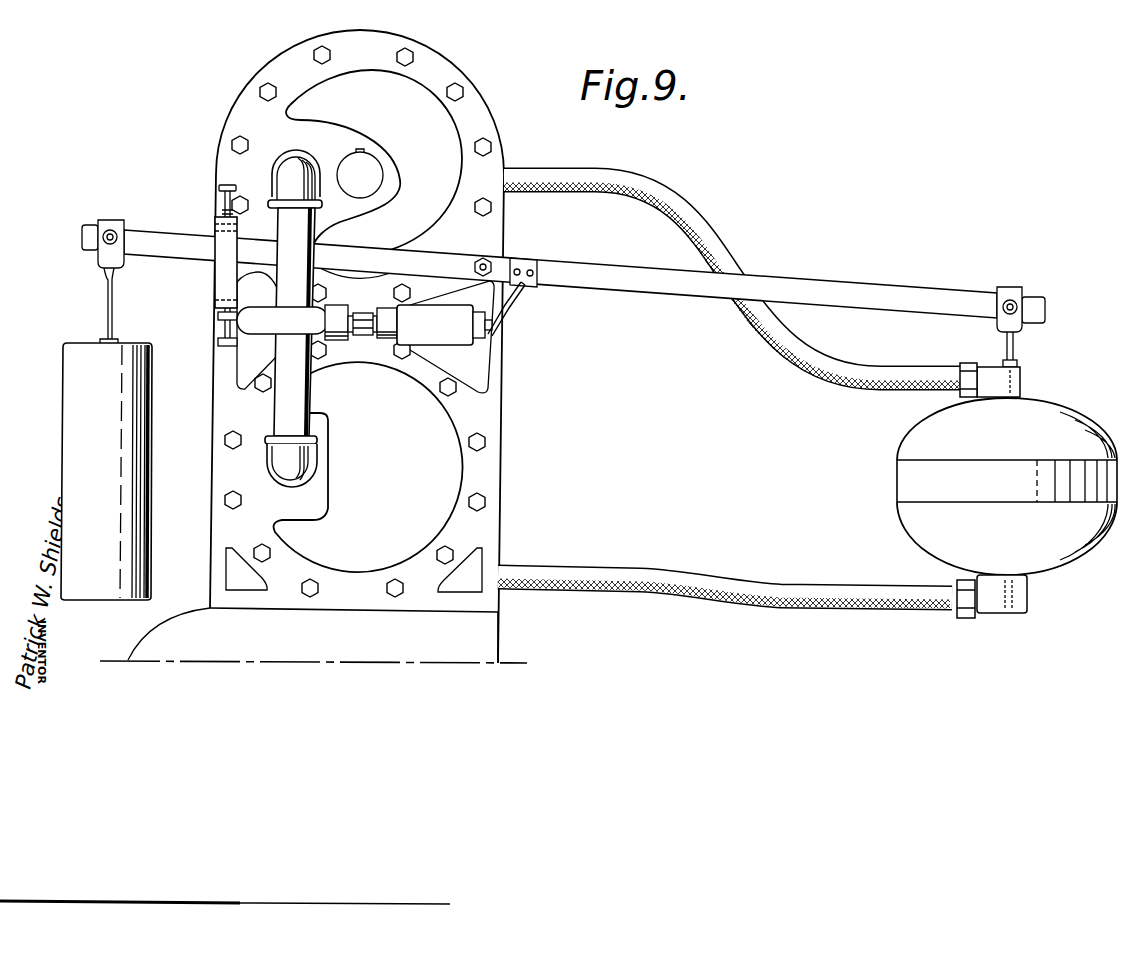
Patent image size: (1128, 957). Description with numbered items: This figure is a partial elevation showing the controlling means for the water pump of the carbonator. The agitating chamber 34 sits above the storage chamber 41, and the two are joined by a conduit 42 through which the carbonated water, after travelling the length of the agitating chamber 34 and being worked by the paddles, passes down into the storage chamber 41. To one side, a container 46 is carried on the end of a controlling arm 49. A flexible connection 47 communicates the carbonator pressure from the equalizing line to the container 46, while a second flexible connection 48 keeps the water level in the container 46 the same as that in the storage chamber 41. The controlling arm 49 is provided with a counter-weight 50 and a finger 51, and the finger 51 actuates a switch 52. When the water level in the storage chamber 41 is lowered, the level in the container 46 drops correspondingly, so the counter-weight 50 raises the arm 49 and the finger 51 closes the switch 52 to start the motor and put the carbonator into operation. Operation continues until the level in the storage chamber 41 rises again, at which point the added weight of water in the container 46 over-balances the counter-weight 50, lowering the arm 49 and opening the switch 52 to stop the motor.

The agitating chamber 34 is at (374, 174).
The storage chamber 41 is at (368, 467).
The conduit 42 is at (278, 410).
The container 46 is at (1007, 490).
The flexible connection 47 is at (718, 222).
The flexible connection 48 is at (648, 560).
The controlling arm 49 is at (793, 287).
The counter-weight 50 is at (75, 396).
The finger 51 is at (507, 309).
The switch 52 is at (364, 325).